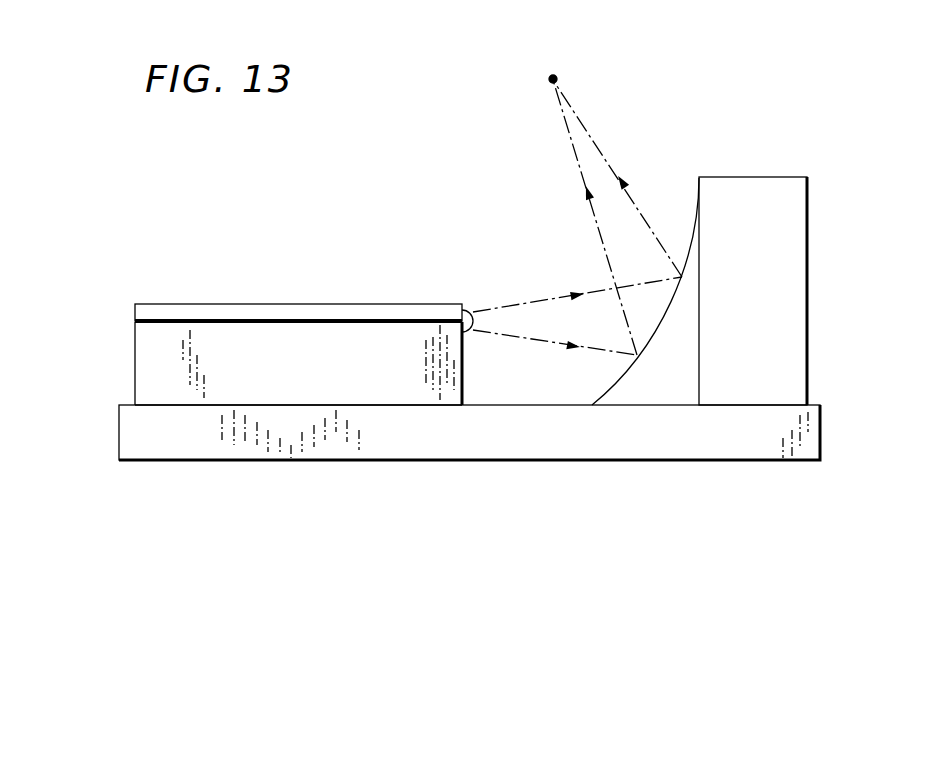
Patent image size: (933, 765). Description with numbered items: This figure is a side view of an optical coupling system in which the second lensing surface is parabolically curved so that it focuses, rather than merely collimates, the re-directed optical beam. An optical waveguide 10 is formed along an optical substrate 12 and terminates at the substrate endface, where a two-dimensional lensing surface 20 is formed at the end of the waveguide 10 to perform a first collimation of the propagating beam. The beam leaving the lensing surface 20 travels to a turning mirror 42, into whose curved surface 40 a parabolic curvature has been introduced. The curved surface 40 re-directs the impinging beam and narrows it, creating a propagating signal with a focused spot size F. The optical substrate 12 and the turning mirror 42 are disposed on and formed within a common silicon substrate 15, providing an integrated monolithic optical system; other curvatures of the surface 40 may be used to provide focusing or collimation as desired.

The optical waveguide 10 is at (238, 320).
The optical substrate 12 is at (152, 366).
The common silicon substrate 15 is at (130, 431).
The two-dimensional lensing surface 20 is at (470, 306).
The curved surface 40 is at (694, 230).
The turning mirror 42 is at (788, 284).
The focused spot size F is at (560, 77).